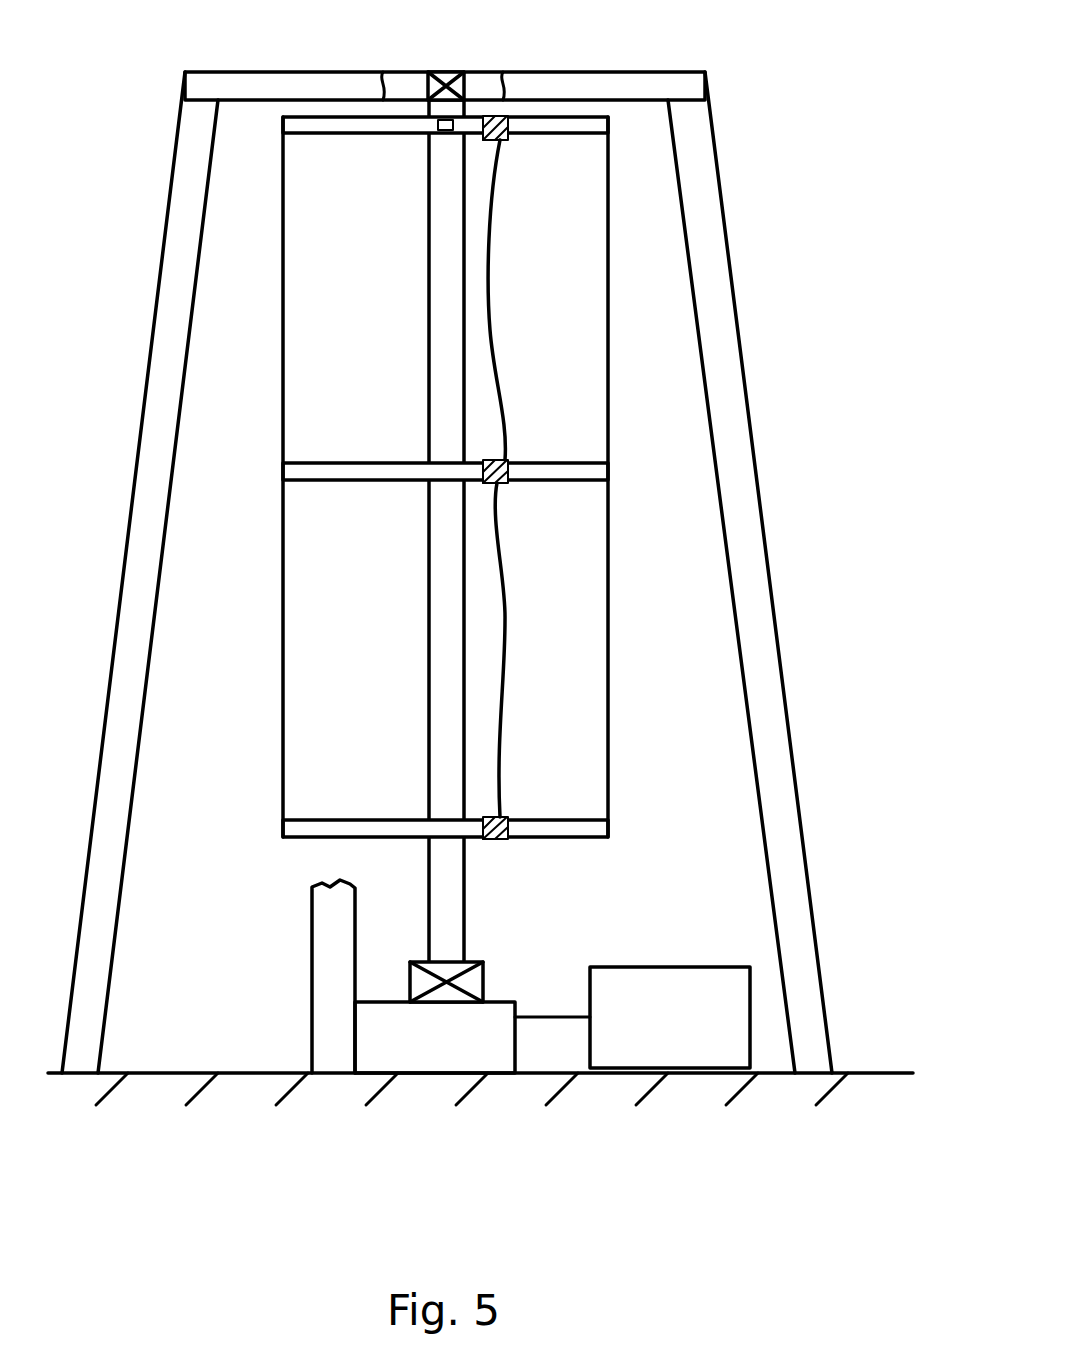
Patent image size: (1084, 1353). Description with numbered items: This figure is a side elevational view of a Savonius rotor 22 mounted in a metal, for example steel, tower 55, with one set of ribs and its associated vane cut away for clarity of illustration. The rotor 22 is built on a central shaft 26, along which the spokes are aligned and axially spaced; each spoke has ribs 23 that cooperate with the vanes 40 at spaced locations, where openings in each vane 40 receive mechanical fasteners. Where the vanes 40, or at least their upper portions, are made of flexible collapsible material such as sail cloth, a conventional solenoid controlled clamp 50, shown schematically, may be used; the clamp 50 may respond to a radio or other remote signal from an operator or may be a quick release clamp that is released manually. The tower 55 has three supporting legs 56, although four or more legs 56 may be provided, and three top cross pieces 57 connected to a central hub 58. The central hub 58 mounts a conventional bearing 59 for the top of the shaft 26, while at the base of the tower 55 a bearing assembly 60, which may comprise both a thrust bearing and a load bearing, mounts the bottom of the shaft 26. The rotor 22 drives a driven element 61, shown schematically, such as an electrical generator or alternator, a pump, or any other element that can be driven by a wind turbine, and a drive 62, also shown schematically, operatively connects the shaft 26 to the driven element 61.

The Savonius rotor 22 is at (670, 392).
The rib 23 is at (323, 130).
The shaft 26 is at (452, 902).
The vane 40 is at (297, 368).
The solenoid controlled clamp 50 is at (433, 128).
The tower 55 is at (481, 536).
The supporting leg 56 is at (108, 912).
The top cross piece 57 is at (300, 92).
The central hub 58 is at (405, 90).
The bearing 59 is at (440, 72).
The bearing assembly 60 is at (473, 977).
The driven element 61 is at (733, 985).
The drive 62 is at (447, 1038).